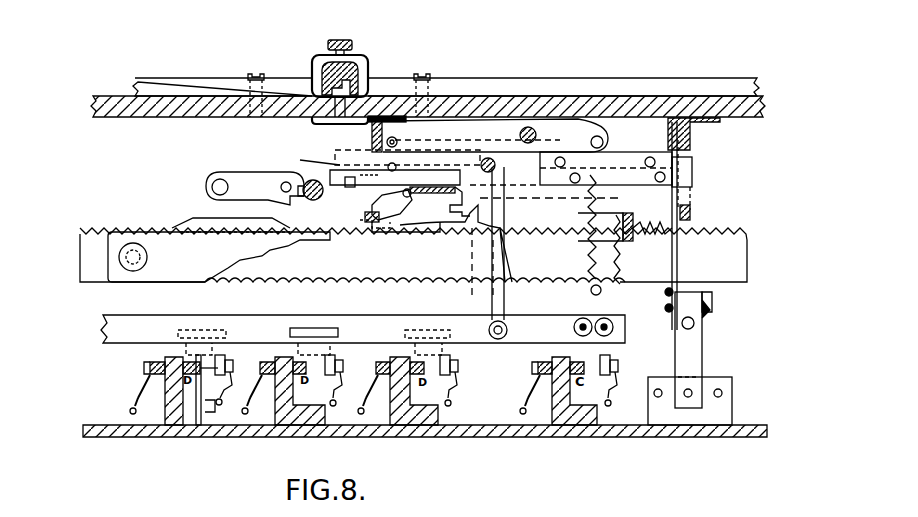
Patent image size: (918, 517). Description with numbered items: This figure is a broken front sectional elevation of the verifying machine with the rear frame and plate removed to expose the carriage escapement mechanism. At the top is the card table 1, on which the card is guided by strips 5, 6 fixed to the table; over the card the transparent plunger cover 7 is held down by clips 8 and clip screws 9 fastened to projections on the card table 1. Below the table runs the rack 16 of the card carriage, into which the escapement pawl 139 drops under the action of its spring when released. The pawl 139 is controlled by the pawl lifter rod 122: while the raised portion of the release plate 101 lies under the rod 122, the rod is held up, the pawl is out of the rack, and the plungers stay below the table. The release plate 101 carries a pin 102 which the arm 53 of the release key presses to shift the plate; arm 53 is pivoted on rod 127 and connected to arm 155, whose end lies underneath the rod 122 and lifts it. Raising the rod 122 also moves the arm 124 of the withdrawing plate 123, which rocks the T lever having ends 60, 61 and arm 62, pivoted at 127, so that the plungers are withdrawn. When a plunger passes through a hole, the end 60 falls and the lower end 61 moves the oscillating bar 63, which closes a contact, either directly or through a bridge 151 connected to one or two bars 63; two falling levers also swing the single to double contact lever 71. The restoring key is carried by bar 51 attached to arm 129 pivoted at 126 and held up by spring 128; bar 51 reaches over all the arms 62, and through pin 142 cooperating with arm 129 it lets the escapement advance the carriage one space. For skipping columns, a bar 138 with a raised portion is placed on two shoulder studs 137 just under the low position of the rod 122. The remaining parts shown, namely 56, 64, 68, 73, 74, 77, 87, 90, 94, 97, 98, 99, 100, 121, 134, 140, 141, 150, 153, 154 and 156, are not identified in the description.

The card table 1 is at (192, 96).
The strip 5 is at (700, 90).
The strip 6 is at (152, 78).
The plunger cover 7 is at (358, 70).
The clip 8 is at (312, 62).
The clip screw 9 is at (328, 44).
The rack 16 is at (84, 258).
The bar 51 is at (372, 137).
The arm 53 is at (634, 220).
The base plate 56 is at (757, 428).
The T lever end 60 is at (693, 185).
The T lever lower end 61 is at (499, 306).
The T lever arm 62 is at (345, 163).
The oscillating bar 63 is at (363, 329).
The pivot 64 is at (508, 331).
The bolt 68 is at (692, 152).
The single to double contact lever 71 is at (670, 303).
The pivot block 73 is at (714, 300).
The pawl 74 is at (712, 312).
The arm 77 is at (703, 349).
The lever arm 87 is at (703, 360).
The bracket 90 is at (722, 408).
The pedestal 94 is at (175, 426).
The bolt 97 is at (218, 362).
The plate 98 is at (206, 380).
The spring 99 is at (220, 400).
The lug 100 is at (213, 410).
The release plate 101 is at (326, 258).
The pin 102 is at (498, 236).
The bar 121 is at (320, 185).
The pawl lifter rod 122 is at (384, 232).
The withdrawing plate 123 is at (450, 167).
The arm of withdrawing plate 124 is at (394, 163).
The pivot 126 is at (530, 128).
The rod 127 is at (490, 158).
The spring 128 is at (615, 180).
The arm 129 is at (495, 135).
The pin 134 is at (598, 295).
The shoulder stud 137 is at (148, 255).
The bar 138 is at (185, 222).
The pawl 139 is at (287, 162).
The arm 140 is at (255, 188).
The pivot 141 is at (212, 182).
The pin 142 is at (398, 142).
The rollers 150 is at (600, 318).
The bridge 151 is at (214, 349).
The strip 153 is at (378, 115).
The nut 154 is at (148, 366).
The arm 155 is at (392, 237).
The slot 156 is at (385, 355).